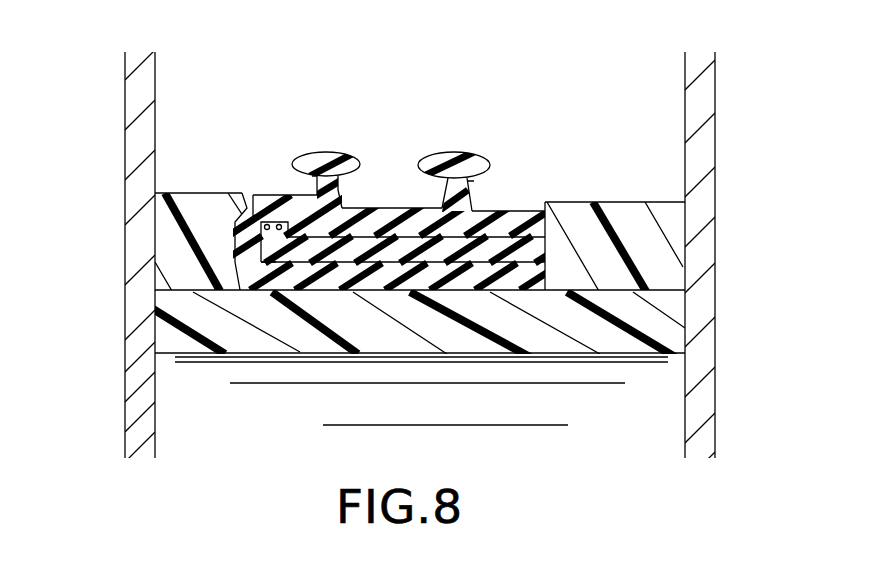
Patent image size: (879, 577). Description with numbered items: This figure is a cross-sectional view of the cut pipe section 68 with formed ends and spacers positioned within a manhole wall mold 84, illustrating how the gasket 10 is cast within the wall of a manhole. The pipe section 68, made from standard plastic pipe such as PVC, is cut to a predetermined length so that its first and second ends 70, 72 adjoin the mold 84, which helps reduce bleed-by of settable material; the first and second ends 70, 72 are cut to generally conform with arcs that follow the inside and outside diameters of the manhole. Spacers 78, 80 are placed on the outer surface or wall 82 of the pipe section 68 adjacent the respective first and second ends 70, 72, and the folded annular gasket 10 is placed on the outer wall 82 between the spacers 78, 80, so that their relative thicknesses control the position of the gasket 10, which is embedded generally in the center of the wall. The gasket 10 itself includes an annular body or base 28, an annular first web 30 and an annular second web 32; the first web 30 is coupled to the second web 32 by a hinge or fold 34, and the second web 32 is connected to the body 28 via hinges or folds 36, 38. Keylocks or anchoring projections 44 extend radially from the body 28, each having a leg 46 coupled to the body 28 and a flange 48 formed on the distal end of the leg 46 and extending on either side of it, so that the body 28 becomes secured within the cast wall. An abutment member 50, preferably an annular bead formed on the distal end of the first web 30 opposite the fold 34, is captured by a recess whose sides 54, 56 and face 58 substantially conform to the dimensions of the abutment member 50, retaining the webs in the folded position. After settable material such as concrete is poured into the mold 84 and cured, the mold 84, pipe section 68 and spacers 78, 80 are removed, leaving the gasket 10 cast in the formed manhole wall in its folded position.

The gasket 10 is at (393, 185).
The annular body 28 is at (510, 213).
The first web 30 is at (340, 240).
The second web 32 is at (275, 283).
The hinge or fold 34 is at (548, 250).
The hinge or fold 36 is at (240, 292).
The hinge or fold 38 is at (230, 213).
The keylock or anchoring projection 44 is at (311, 174).
The leg 46 is at (334, 177).
The flange 48 is at (328, 153).
The abutment member 50 is at (232, 259).
The side of recess 54 is at (232, 232).
The side of recess 56 is at (272, 222).
The face of recess 58 is at (267, 215).
The pipe section 68 is at (487, 348).
The first end 70 is at (153, 328).
The second end 72 is at (683, 330).
The spacer 78 is at (197, 200).
The spacer 80 is at (667, 217).
The outer surface or wall 82 is at (612, 296).
The manhole wall mold 84 is at (710, 147).